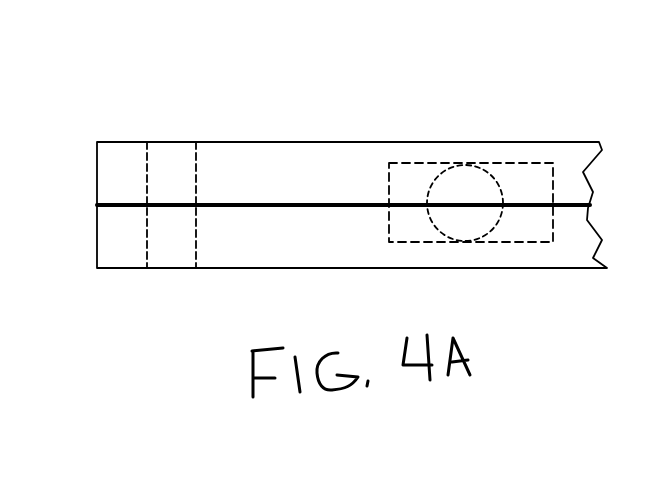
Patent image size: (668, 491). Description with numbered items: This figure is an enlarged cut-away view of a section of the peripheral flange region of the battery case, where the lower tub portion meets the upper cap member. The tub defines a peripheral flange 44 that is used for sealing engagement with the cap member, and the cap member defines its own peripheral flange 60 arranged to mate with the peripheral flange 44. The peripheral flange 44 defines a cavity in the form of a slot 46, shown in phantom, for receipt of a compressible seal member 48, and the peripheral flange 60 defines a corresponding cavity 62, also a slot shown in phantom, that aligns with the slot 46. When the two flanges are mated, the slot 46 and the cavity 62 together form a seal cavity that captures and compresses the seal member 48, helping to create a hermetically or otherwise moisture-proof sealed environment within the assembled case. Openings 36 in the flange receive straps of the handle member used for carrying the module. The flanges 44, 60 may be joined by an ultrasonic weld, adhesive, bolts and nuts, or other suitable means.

The openings 36 is at (318, 152).
The peripheral flange 44 is at (348, 118).
The slot 46 is at (507, 142).
The compressible seal member 48 is at (447, 129).
The peripheral flange 60 is at (352, 287).
The cavity 62 is at (377, 332).